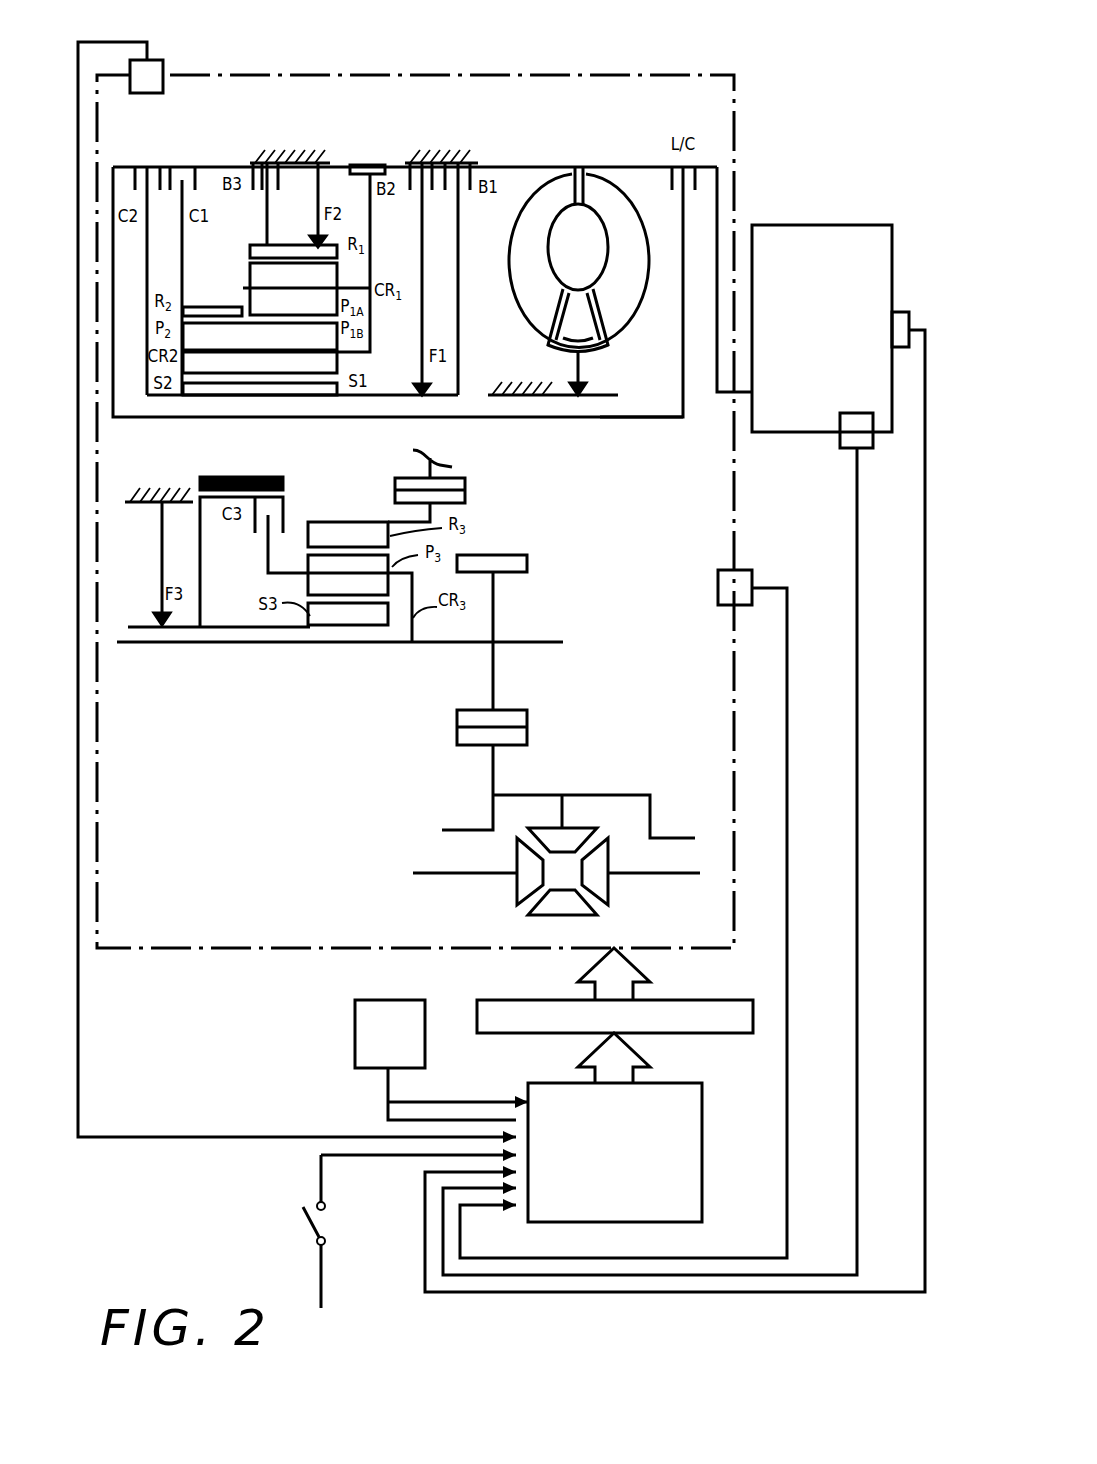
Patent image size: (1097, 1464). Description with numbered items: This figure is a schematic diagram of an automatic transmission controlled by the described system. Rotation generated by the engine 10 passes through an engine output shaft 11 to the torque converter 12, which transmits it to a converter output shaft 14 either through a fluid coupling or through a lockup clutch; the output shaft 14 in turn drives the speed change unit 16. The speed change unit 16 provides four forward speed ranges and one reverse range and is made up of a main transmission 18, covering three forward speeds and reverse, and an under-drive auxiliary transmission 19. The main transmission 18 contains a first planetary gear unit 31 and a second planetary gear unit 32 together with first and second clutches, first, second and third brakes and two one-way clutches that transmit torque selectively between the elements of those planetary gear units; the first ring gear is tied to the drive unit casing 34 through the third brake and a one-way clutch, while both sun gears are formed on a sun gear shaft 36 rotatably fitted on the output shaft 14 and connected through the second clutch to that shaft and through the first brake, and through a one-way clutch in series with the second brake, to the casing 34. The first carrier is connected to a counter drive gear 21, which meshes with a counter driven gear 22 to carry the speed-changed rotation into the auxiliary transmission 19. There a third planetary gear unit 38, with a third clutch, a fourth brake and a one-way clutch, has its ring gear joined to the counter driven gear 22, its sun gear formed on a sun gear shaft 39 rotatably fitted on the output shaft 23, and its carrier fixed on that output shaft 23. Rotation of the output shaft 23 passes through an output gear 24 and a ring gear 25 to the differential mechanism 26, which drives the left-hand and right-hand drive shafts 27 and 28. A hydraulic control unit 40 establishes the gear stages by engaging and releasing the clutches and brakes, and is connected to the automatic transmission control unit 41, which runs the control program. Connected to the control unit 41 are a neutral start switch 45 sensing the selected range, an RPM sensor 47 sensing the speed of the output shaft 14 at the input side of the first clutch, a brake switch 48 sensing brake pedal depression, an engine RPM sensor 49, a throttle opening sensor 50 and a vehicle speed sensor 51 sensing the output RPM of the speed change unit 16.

The engine 10 is at (848, 225).
The engine output shaft 11 is at (717, 177).
The torque converter 12 is at (600, 152).
The converter output shaft 14 is at (630, 427).
The speed change unit 16 is at (500, 153).
The main transmission 18 is at (388, 110).
The under-drive auxiliary transmission 19 is at (281, 684).
The counter drive gear 21 is at (365, 165).
The counter driven gear 22 is at (465, 500).
The output shaft of the auxiliary transmission 23 is at (440, 645).
The output gear 24 is at (498, 556).
The ring gear 25 is at (528, 734).
The differential mechanism 26 is at (600, 778).
The left-hand drive shaft 27 is at (420, 870).
The right-hand drive shaft 28 is at (700, 872).
The first planetary gear unit 31 is at (366, 275).
The second planetary gear unit 32 is at (206, 296).
The drive unit casing 34 is at (299, 148).
The sun gear shaft 36 is at (150, 398).
The third planetary gear unit 38 is at (362, 657).
The sun gear shaft 39 is at (235, 630).
The hydraulic control unit 40 is at (692, 1000).
The automatic transmission control unit 41 is at (670, 1083).
The neutral start switch 45 is at (372, 1041).
The RPM sensor 47 is at (157, 58).
The brake switch 48 is at (325, 1222).
The engine RPM sensor 49 is at (898, 312).
The throttle opening sensor 50 is at (862, 440).
The vehicle speed sensor 51 is at (745, 580).